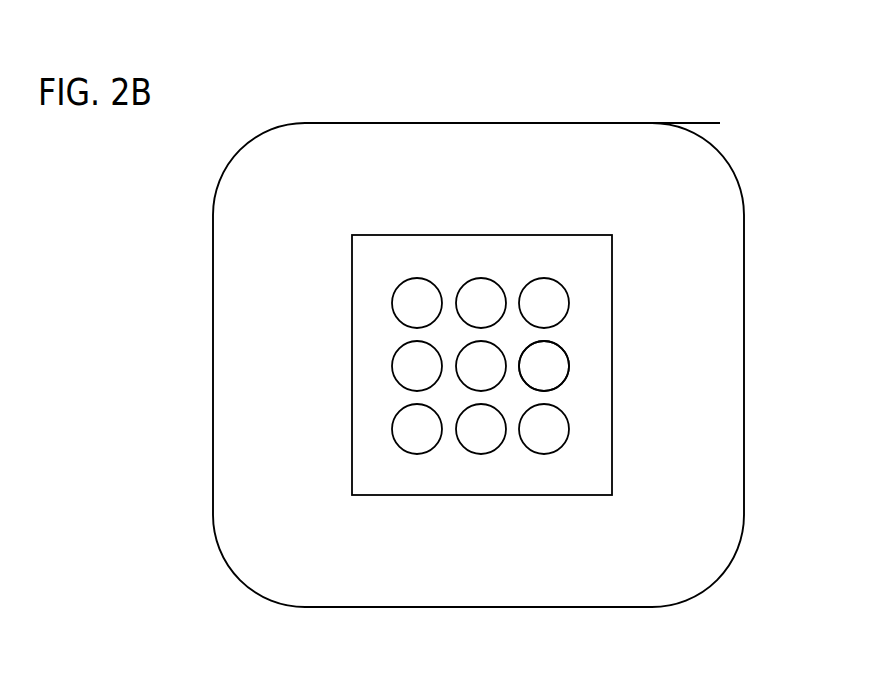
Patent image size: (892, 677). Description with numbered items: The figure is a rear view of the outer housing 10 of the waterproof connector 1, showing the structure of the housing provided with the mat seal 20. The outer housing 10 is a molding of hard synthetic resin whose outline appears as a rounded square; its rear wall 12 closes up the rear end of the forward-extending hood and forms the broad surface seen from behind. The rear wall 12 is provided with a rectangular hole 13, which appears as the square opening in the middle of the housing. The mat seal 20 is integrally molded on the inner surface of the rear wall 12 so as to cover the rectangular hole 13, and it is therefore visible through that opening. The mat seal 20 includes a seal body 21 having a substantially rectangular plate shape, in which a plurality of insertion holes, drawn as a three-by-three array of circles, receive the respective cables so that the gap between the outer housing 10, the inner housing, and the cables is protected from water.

The waterproof connector 1 is at (402, 112).
The outer housing 10 is at (632, 122).
The rear wall 12 is at (537, 141).
The rectangular hole 13 is at (432, 235).
The mat seal 20 is at (603, 291).
The seal body 21 is at (585, 367).